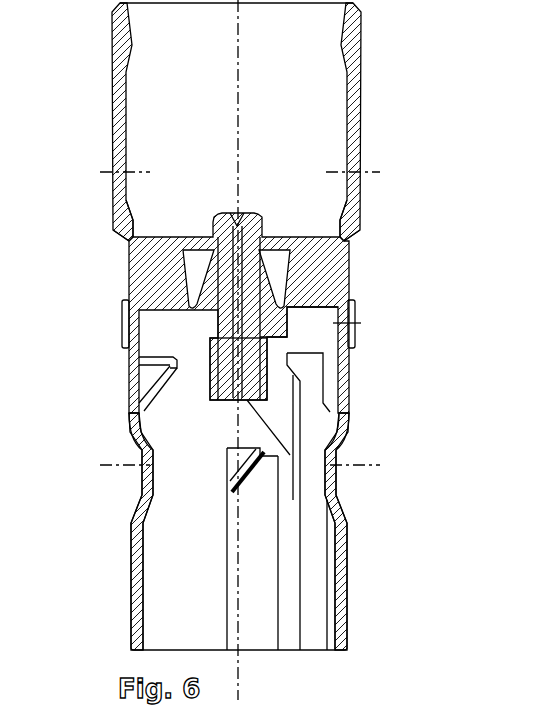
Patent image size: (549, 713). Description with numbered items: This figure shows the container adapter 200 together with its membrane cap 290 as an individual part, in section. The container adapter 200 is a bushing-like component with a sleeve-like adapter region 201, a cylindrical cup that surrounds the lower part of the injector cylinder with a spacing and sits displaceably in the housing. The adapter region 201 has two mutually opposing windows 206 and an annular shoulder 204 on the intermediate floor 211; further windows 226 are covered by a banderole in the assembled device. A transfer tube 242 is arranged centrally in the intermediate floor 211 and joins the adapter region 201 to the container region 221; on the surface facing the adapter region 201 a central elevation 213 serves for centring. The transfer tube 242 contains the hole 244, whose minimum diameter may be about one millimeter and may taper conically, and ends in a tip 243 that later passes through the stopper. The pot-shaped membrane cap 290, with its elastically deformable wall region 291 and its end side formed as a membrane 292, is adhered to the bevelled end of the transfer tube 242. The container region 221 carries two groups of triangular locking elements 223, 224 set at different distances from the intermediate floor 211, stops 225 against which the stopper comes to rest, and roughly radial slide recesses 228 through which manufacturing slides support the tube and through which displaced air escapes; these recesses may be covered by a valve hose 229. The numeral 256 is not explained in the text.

The container adapter 200 is at (364, 154).
The adapter region 201 is at (112, 109).
The annular shoulder 204 is at (120, 232).
The windows 206 is at (357, 209).
The intermediate floor 211 is at (290, 243).
The central elevation 213 is at (228, 219).
The container region 221 is at (135, 368).
The locking element 223 is at (227, 473).
The locking element 224 is at (160, 365).
The stops 225 is at (283, 325).
The windows 226 is at (316, 488).
The slide recesses 228 is at (352, 330).
The valve hose 229 is at (352, 322).
The transfer tube 242 is at (222, 331).
The tip 243 is at (288, 455).
The hole 244 is at (146, 325).
The connector 256 is at (398, 712).
The membrane cap 290 is at (208, 412).
The wall region 291 is at (213, 379).
The membrane 292 is at (340, 562).